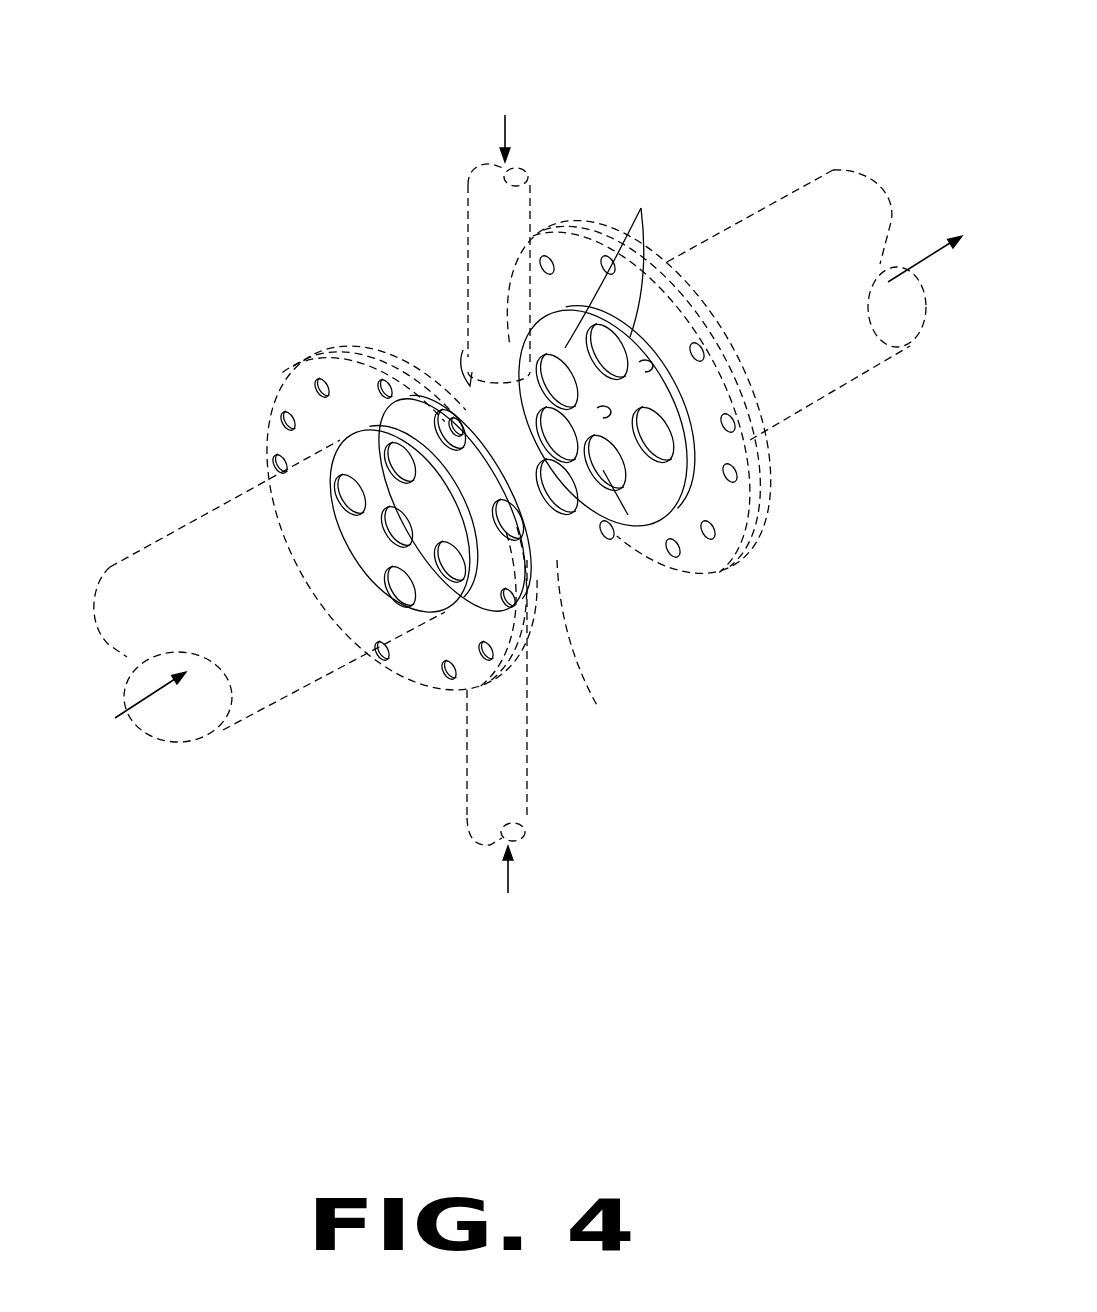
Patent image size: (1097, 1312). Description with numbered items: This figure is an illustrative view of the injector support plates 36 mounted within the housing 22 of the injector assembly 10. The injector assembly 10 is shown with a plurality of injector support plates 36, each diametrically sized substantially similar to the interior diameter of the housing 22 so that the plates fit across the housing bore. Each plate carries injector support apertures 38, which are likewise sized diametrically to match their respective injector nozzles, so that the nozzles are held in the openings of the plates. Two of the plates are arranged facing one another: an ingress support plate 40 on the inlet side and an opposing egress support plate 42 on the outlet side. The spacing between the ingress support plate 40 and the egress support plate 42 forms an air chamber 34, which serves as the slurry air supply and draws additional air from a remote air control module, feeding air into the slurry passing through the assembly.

The injector assembly 10 is at (684, 116).
The housing 22 is at (577, 543).
The air chamber 34 is at (594, 660).
The injector support plates 36 is at (370, 547).
The injector support apertures 38 is at (455, 615).
The ingress support plate 40 is at (418, 395).
The egress support plate 42 is at (611, 252).